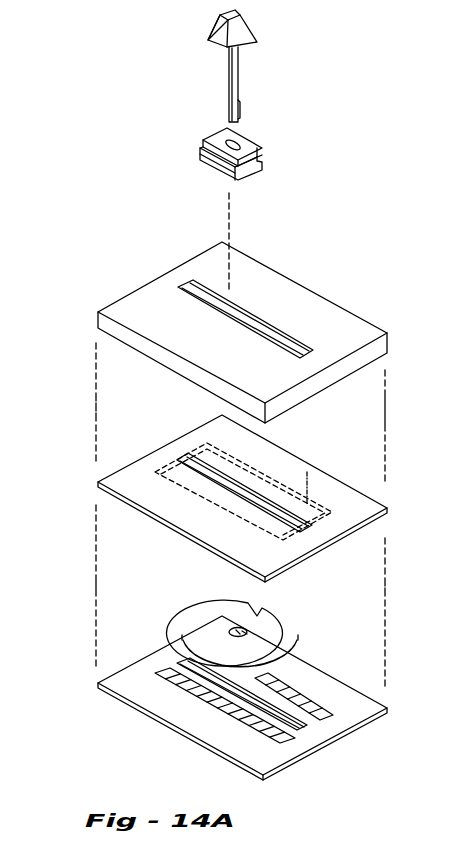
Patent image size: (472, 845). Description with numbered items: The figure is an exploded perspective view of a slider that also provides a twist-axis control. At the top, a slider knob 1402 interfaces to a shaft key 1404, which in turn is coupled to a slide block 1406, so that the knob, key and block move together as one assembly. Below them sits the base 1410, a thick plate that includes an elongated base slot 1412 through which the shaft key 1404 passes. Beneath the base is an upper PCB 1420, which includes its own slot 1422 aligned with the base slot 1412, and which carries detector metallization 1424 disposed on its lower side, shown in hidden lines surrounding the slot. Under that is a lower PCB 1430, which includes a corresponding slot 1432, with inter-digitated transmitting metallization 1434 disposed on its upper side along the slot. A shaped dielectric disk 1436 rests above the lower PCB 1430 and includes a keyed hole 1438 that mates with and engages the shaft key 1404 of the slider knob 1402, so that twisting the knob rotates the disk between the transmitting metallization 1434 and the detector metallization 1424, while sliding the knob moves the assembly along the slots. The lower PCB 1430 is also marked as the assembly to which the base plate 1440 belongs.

The slider knob 1402 is at (237, 77).
The shaft key 1404 is at (242, 108).
The slide block 1406 is at (255, 145).
The base 1410 is at (152, 293).
The base slot 1412 is at (250, 317).
The upper PCB 1420 is at (198, 435).
The slot 1422 is at (270, 508).
The detector metallization 1424 is at (223, 510).
The lower PCB 1430 is at (212, 704).
The slot 1432 is at (302, 730).
The inter-digitated transmitting metallization 1434 is at (165, 670).
The shaped dielectric disk 1436 is at (285, 635).
The keyed hole 1438 is at (243, 630).
The base plate 1440 is at (272, 765).